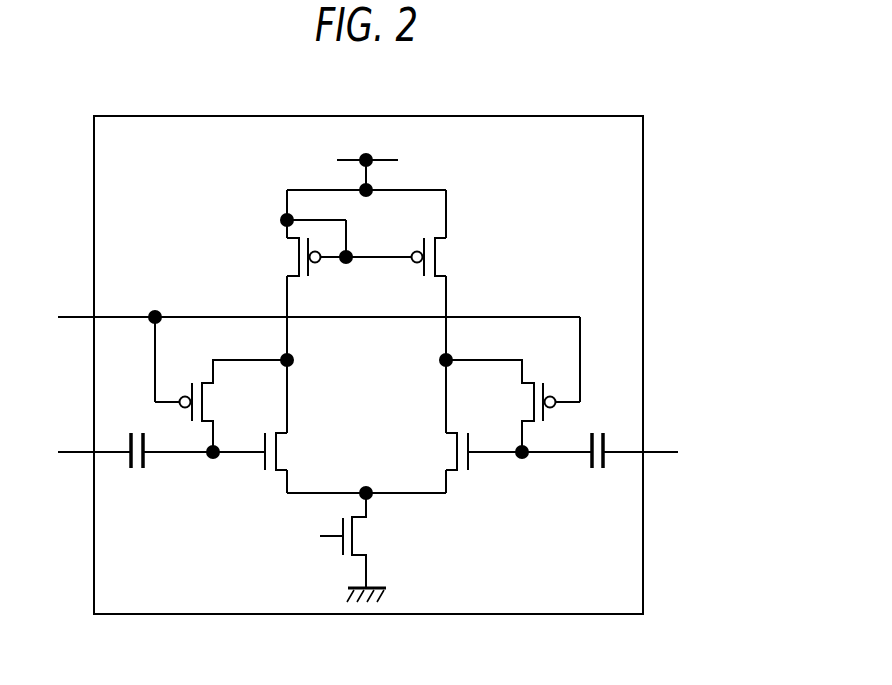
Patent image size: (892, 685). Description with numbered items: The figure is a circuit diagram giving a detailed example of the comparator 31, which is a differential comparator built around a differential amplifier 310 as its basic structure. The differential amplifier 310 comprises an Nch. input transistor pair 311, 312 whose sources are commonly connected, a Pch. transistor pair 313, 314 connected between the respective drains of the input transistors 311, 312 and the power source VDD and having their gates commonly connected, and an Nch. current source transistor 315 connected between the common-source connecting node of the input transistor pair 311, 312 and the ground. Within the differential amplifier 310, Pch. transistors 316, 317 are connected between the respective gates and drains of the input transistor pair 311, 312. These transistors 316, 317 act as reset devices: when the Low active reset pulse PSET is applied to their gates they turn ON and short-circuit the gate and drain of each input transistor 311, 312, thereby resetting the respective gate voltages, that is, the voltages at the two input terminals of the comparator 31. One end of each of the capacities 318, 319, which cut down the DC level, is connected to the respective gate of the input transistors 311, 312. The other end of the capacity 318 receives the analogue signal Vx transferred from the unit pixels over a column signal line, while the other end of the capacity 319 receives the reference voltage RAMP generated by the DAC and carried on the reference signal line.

The comparator 31 is at (567, 128).
The differential amplifier 310 is at (231, 511).
The Nch. input transistor 311 is at (280, 448).
The Nch. input transistor 312 is at (451, 450).
The Pch. transistor 313 is at (288, 257).
The Pch. transistor 314 is at (443, 256).
The Nch. current source transistor 315 is at (363, 532).
The Pch. transistor 316 is at (208, 400).
The Pch. transistor 317 is at (528, 400).
The capacity 318 is at (137, 470).
The capacity 319 is at (597, 470).